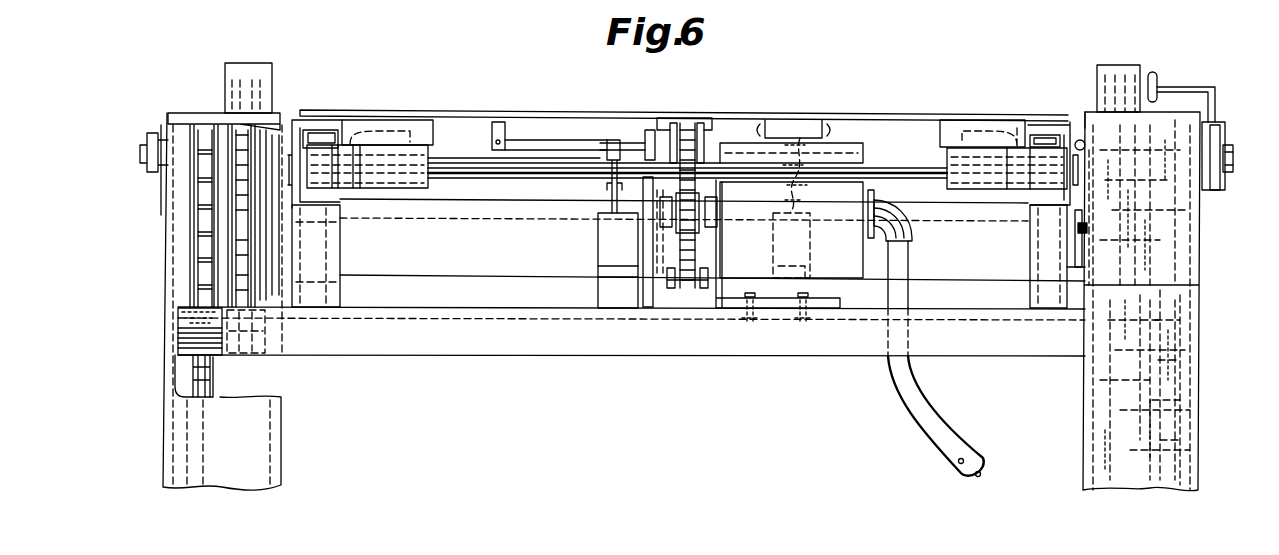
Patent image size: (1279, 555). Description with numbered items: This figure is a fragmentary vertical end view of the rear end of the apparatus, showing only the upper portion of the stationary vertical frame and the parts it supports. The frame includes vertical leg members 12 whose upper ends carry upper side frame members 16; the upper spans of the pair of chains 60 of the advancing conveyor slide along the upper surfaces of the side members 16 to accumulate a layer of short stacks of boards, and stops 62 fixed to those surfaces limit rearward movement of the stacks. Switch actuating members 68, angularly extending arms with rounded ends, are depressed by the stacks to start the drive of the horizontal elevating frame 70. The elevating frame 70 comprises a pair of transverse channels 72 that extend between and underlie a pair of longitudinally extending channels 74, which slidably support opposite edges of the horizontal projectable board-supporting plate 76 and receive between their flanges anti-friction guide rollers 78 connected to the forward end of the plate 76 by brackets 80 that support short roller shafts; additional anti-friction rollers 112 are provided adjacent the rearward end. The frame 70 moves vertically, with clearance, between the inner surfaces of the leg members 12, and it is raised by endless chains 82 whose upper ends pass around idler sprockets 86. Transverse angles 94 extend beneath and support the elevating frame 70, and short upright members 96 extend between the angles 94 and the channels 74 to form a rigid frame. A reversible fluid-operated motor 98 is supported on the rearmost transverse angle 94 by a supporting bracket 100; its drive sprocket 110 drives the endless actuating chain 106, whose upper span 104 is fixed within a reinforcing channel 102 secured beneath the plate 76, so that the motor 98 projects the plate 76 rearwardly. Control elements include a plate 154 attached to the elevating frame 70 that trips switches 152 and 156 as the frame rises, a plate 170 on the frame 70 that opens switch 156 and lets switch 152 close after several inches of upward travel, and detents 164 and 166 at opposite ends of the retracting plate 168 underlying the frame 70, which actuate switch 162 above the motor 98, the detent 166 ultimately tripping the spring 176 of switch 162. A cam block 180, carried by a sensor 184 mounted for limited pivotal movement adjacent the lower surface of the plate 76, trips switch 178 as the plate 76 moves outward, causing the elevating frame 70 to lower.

The vertical leg members 12 is at (164, 452).
The upper side frame member 16 is at (165, 230).
The chains 60 is at (230, 89).
The stops 62 is at (260, 63).
The switch actuating members 68 is at (1157, 82).
The horizontal elevating frame 70 is at (433, 280).
The transverse channels 72 is at (487, 264).
The longitudinally extending channels 74 is at (297, 120).
The horizontal projectable board-supporting plate 76 is at (860, 112).
The anti-friction guide rollers 78 is at (330, 130).
The brackets 80 is at (395, 142).
The endless chains 82 is at (213, 381).
The idler sprockets 86 is at (193, 143).
The transverse angles 94 is at (505, 356).
The short upright members 96 is at (340, 248).
The fluid-operated motor 98 is at (872, 180).
The supporting bracket 100 is at (698, 356).
The reinforcing channel 102 is at (702, 123).
The upper span 104 is at (685, 123).
The actuating chain 106 is at (677, 290).
The drive sprocket 110 is at (607, 193).
The additional anti-friction rollers 112 is at (415, 196).
The switch 152 is at (1092, 243).
The plate 154 is at (1080, 250).
The switch 156 is at (1087, 112).
The switch 162 is at (810, 220).
The detent 164 is at (760, 143).
The detent 166 is at (824, 122).
The retracting plate 168 is at (899, 134).
The plate 170 is at (1080, 260).
The spring 176 is at (783, 183).
The switch 178 is at (598, 257).
The cam block 180 is at (609, 148).
The sensor 184 is at (554, 140).